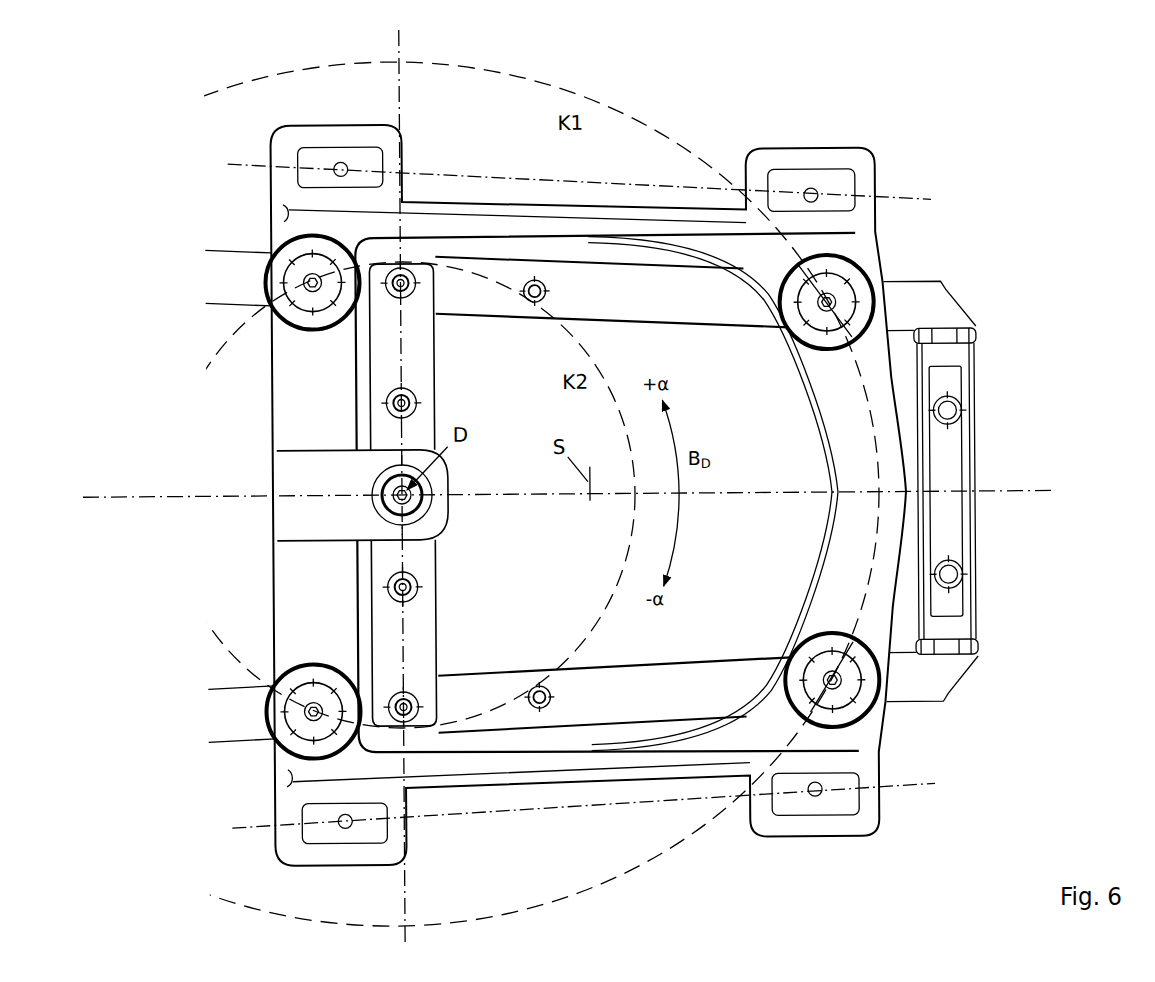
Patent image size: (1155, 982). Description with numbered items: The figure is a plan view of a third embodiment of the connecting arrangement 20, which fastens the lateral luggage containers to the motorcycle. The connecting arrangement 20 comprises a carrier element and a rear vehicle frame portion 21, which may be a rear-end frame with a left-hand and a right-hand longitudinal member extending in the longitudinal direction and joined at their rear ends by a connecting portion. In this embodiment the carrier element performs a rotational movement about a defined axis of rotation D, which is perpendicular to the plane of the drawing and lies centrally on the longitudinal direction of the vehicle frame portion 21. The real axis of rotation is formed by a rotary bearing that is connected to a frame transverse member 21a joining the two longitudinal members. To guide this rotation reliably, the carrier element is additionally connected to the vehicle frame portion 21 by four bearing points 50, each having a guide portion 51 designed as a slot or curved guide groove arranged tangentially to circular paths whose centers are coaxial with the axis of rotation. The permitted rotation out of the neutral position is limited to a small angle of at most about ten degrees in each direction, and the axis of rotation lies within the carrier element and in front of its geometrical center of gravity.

The connecting arrangement 20 is at (950, 181).
The vehicle frame portion 21 is at (978, 410).
The frame transverse member 21a is at (427, 390).
The bearing point 50 is at (350, 264).
The guide portion 51 is at (312, 331).